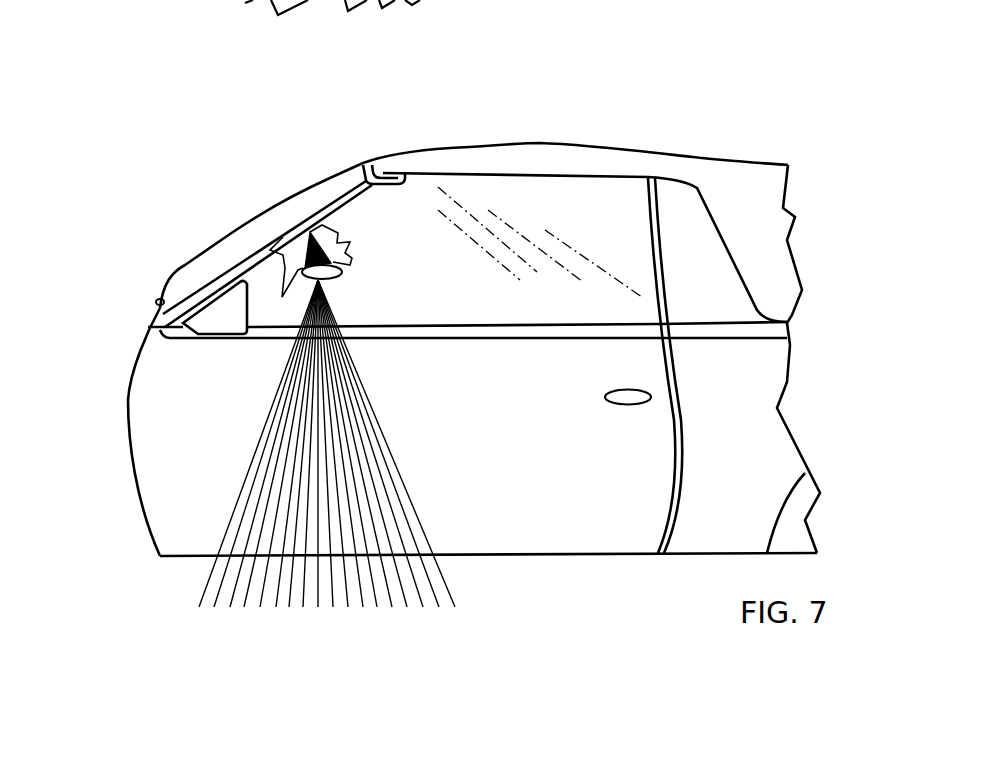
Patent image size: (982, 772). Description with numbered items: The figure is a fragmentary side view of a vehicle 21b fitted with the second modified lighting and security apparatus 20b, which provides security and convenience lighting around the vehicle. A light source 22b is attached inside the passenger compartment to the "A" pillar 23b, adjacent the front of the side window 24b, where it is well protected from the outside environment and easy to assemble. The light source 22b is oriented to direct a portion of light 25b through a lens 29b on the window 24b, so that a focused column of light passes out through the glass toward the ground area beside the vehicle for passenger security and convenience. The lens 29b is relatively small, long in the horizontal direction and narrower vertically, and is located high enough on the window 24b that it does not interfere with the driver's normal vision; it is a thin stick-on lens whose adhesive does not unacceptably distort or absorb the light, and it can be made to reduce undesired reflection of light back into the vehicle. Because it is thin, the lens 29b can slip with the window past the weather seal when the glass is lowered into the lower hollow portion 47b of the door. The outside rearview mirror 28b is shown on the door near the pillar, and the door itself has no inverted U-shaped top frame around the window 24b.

The lighting and security apparatus 20b is at (302, 190).
The vehicle 21b is at (515, 95).
The light source 22b is at (334, 233).
The "A" pillar 23b is at (280, 224).
The side window 24b is at (622, 235).
The portion of light 25b is at (336, 264).
The outside rearview mirror 28b is at (207, 312).
The lens 29b is at (342, 273).
The lower hollow portion 47b is at (570, 413).